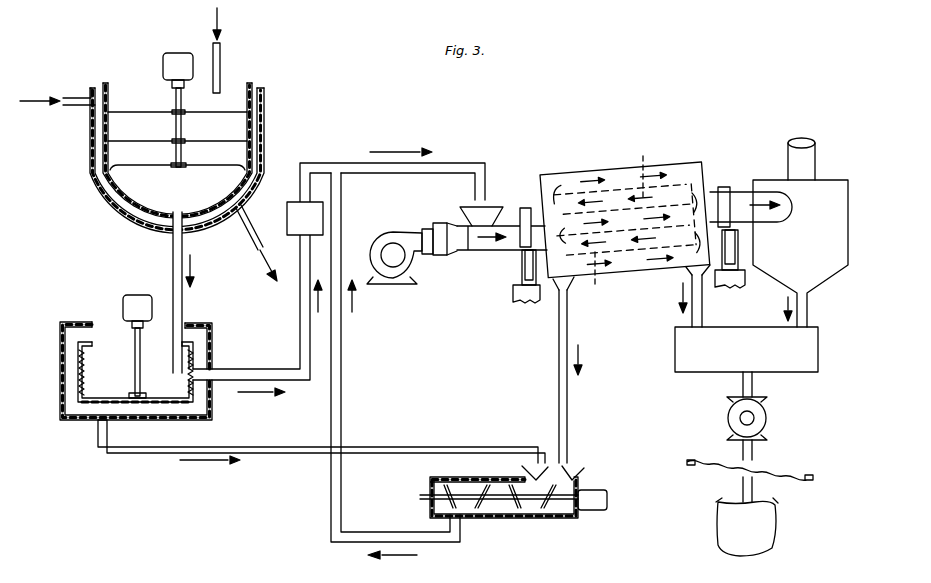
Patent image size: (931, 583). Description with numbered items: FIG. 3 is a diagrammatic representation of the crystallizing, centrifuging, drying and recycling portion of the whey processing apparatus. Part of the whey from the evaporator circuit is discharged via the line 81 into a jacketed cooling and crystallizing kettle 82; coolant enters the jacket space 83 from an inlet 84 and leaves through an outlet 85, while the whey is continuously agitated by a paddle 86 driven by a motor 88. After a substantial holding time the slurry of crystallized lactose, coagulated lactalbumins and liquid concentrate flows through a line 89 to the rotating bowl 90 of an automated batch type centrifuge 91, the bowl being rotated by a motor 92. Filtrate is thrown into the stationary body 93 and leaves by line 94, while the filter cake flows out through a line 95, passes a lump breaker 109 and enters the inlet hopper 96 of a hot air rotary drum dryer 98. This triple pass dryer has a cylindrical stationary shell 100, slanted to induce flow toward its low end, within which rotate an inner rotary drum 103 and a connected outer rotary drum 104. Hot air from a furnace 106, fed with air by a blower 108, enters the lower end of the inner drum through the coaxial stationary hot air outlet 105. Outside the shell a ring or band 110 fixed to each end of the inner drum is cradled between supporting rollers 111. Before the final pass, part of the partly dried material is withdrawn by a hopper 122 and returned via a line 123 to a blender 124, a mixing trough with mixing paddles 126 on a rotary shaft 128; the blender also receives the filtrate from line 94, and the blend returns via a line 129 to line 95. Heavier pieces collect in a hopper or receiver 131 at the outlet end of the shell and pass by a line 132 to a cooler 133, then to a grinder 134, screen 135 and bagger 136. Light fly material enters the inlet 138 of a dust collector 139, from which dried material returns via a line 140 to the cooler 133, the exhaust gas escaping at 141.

The line 81 is at (221, 66).
The jacketed cooling and crystallizing kettle 82 is at (279, 105).
The jacket space 83 is at (262, 131).
The inlet 84 is at (82, 96).
The outlet 85 is at (247, 226).
The paddle 86 is at (127, 182).
The motor 88 is at (165, 64).
The line 89 is at (172, 248).
The rotating bowl 90 is at (78, 375).
The centrifuge 91 is at (52, 325).
The motor 92 is at (125, 308).
The stationary body 93 is at (62, 408).
The line 94 is at (265, 447).
The line 95 is at (300, 340).
The inlet hopper 96 is at (468, 208).
The hot air rotary drum dryer 98 is at (679, 155).
The cylindrical stationary shell 100 is at (606, 172).
The inner rotary drum 103 is at (644, 170).
The outer rotary drum 104 is at (609, 276).
The stationary hot air outlet 105 is at (466, 251).
The furnace 106 is at (430, 228).
The blower 108 is at (393, 281).
The lump breaker 109 is at (291, 218).
The ring or band 110 is at (527, 207).
The supporting rollers 111 is at (522, 262).
The hopper 122 is at (555, 283).
The line 123 is at (559, 366).
The blender 124 is at (592, 511).
The mixing paddles 126 is at (515, 516).
The rotary shaft 128 is at (432, 497).
The line 129 is at (342, 385).
The hopper or receiver 131 is at (688, 268).
The line 132 is at (702, 312).
The cooler 133 is at (690, 364).
The grinder 134 is at (728, 418).
The screen 135 is at (694, 463).
The bagger 136 is at (720, 522).
The inlet 138 is at (765, 192).
The dust collector 139 is at (828, 240).
The line 140 is at (807, 308).
The exhaust 141 is at (815, 160).